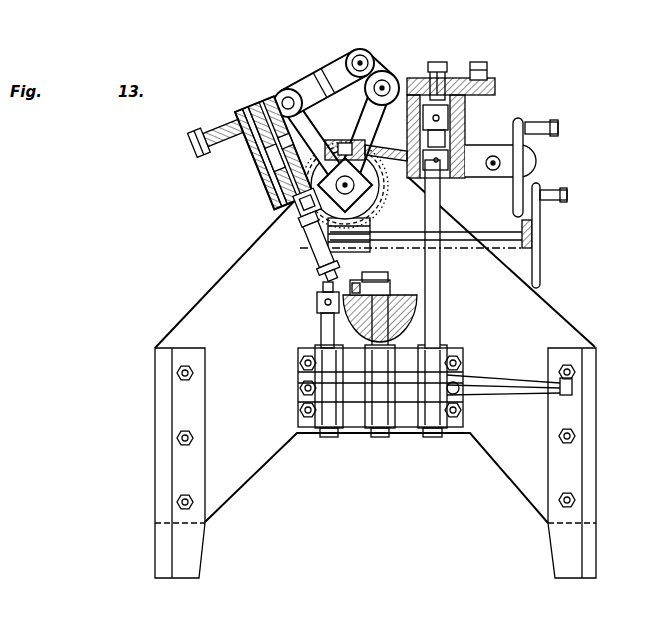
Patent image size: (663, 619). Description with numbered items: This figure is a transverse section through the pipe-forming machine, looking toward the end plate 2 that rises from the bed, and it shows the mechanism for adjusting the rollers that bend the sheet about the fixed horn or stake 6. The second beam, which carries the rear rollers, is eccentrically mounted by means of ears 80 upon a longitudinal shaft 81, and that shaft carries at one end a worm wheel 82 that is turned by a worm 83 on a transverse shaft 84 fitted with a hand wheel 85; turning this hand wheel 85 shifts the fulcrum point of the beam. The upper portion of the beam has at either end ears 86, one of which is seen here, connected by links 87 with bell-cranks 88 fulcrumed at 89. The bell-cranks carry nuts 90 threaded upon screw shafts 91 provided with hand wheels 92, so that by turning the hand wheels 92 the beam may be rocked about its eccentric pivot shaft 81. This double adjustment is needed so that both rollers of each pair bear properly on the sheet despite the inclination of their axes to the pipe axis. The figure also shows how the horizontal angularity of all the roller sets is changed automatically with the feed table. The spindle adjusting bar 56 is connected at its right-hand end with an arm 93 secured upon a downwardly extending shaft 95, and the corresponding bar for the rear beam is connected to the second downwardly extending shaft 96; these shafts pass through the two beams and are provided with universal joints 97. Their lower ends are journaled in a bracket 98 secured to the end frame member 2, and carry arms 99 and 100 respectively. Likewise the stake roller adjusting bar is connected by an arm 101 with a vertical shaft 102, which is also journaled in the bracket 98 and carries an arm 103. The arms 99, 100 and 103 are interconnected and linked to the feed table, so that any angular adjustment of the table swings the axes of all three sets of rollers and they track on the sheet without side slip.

The end plate 2 is at (227, 287).
The stake 6 is at (410, 312).
The bar 56 is at (497, 74).
The ears 80 is at (380, 183).
The longitudinal shaft 81 is at (383, 202).
The worm wheel 82 is at (378, 220).
The worm 83 is at (370, 254).
The transverse shaft 84 is at (490, 238).
The hand wheel 85 is at (535, 228).
The ears 86 is at (298, 96).
The links 87 is at (318, 88).
The bell-cranks 88 is at (395, 75).
The fulcrum 89 is at (384, 88).
The nuts 90 is at (343, 128).
The screw shafts 91 is at (394, 146).
The hand wheels 92 is at (523, 160).
The arm 93 is at (460, 80).
The shaft 95 is at (440, 70).
The shaft 96 is at (320, 322).
The universal joints 97 is at (462, 132).
The bracket 98 is at (353, 418).
The arm 99 is at (430, 420).
The arm 100 is at (298, 393).
The arm 101 is at (392, 285).
The vertical shaft 102 is at (405, 320).
The arm 103 is at (378, 425).